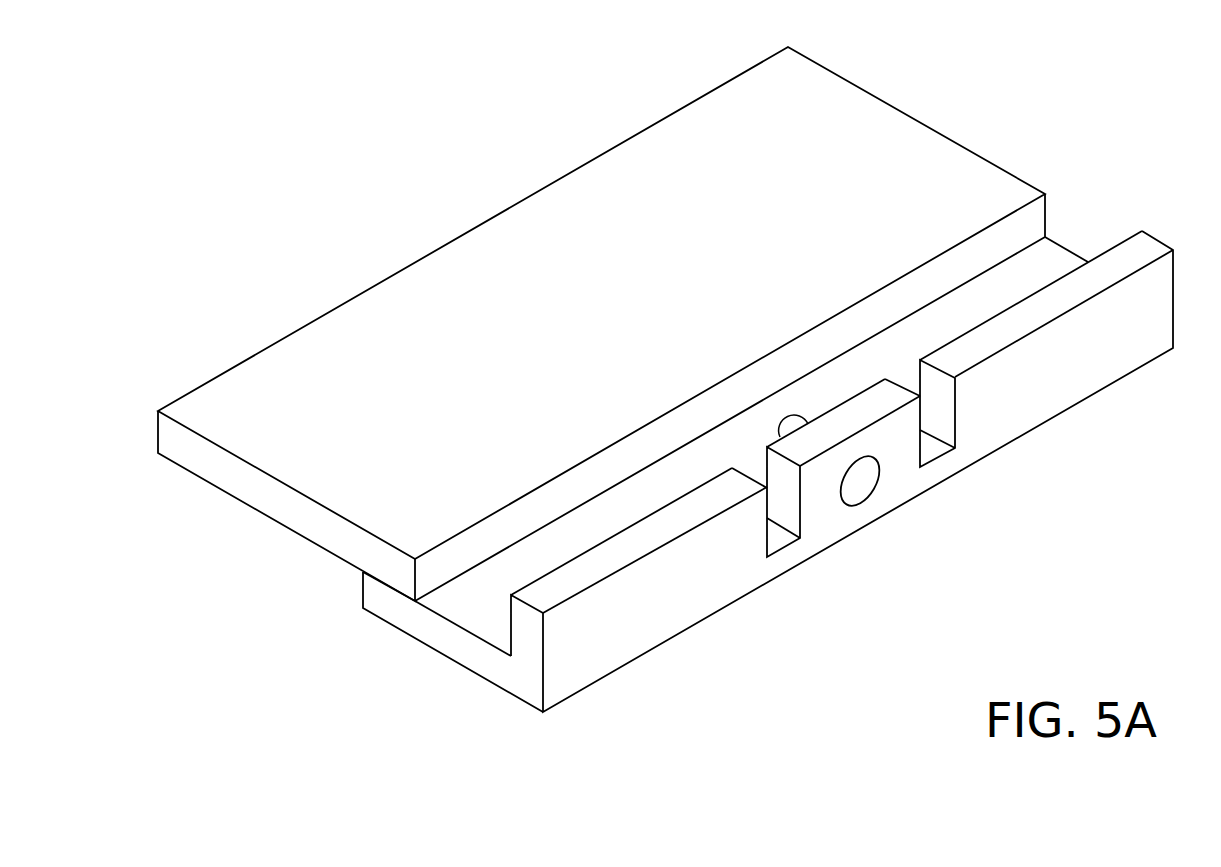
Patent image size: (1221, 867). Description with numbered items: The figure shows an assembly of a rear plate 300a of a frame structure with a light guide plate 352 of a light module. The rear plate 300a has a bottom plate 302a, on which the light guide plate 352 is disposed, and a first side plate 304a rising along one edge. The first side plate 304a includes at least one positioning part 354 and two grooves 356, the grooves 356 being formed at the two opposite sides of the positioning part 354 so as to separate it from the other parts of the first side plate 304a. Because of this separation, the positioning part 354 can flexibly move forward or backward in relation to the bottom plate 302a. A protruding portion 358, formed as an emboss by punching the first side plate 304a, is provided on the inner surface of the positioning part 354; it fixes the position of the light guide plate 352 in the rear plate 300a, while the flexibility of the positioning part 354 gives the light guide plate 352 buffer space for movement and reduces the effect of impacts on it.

The rear plate 300a is at (768, 428).
The bottom plate 302a is at (450, 645).
The first side plate 304a is at (535, 636).
The light guide plate 352 is at (327, 330).
The positioning part 354 is at (772, 272).
The grooves 356 is at (797, 515).
The protruding portion 358 is at (797, 418).